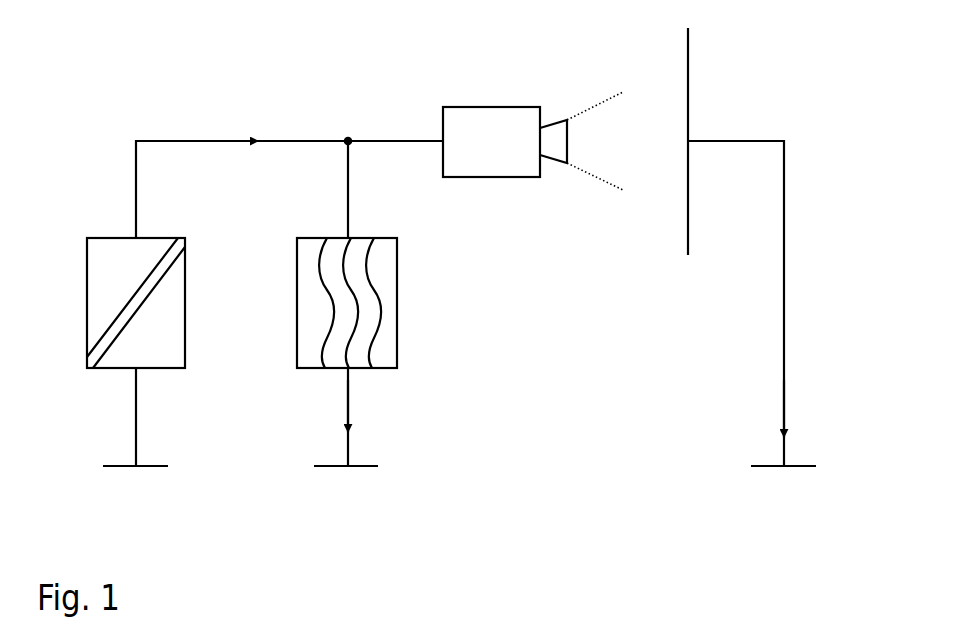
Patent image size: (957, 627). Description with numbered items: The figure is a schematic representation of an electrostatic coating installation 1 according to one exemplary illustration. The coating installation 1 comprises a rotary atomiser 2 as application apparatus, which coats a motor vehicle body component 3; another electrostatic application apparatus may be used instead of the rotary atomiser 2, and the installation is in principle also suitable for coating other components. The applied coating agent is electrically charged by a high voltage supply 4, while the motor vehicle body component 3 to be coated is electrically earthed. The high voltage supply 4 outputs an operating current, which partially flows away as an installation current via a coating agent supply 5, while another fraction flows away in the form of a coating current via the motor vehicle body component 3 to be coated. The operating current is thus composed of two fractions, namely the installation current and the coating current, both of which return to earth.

The electrostatic coating installation 1 is at (165, 66).
The rotary atomiser 2 is at (493, 107).
The motor vehicle body component 3 is at (688, 73).
The high voltage supply 4 is at (185, 277).
The coating agent supply 5 is at (397, 283).